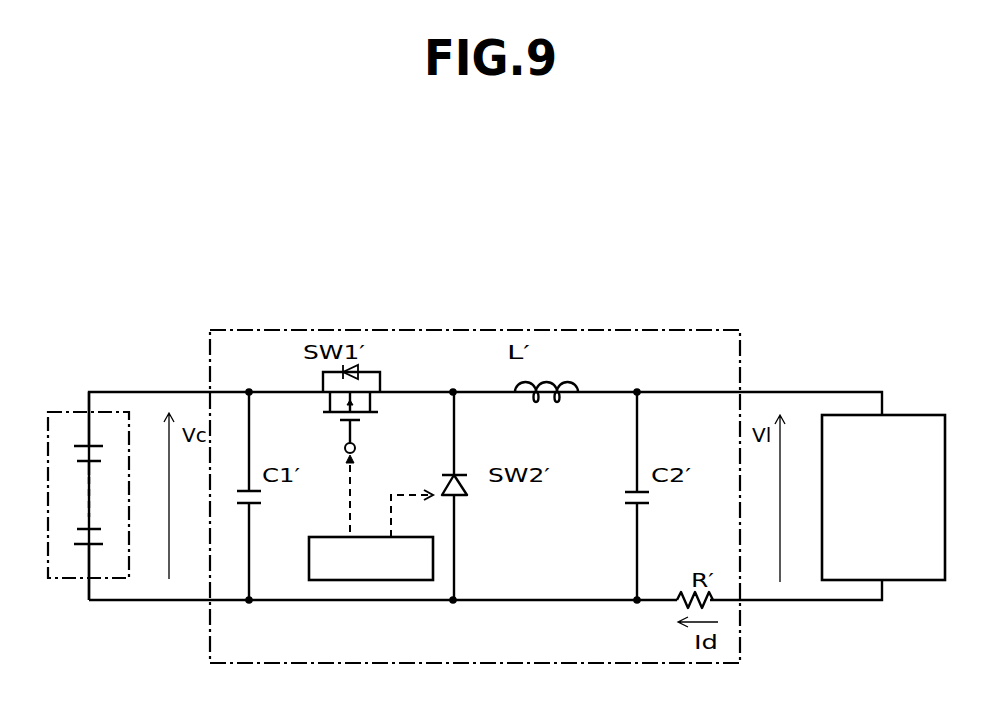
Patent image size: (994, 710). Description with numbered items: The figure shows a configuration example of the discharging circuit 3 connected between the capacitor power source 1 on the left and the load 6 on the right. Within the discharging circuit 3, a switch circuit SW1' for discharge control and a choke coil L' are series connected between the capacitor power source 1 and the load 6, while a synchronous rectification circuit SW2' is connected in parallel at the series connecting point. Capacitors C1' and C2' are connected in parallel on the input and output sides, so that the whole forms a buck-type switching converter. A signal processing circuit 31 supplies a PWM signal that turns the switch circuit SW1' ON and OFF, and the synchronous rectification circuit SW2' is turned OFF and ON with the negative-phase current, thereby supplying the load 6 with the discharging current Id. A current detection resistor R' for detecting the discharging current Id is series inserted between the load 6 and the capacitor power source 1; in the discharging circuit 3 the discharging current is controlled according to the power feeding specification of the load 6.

The capacitor power source 1 is at (68, 412).
The discharging circuit 3 is at (208, 370).
The signal processing circuit 31 is at (333, 537).
The load 6 is at (903, 413).